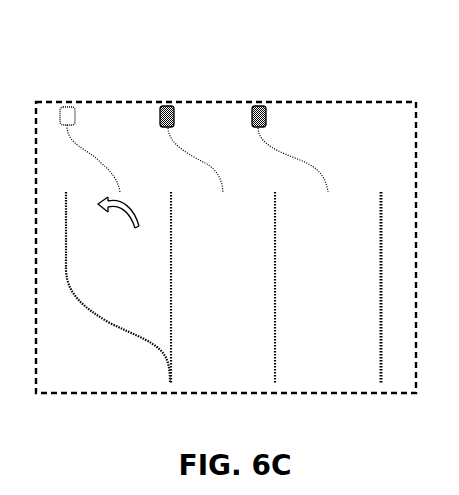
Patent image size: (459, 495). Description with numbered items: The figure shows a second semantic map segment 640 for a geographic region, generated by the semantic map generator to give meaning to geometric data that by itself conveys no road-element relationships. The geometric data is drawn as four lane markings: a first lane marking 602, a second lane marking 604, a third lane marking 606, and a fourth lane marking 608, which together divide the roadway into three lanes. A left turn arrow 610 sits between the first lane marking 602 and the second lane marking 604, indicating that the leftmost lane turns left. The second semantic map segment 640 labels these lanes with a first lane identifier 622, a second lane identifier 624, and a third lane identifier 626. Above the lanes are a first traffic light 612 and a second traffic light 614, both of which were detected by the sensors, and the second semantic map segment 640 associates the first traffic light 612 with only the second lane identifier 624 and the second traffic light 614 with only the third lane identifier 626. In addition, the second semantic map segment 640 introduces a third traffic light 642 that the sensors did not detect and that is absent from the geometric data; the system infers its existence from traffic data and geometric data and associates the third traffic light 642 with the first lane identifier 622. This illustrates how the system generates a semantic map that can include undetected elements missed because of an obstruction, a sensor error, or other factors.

The first lane marking 602 is at (67, 262).
The second lane marking 604 is at (171, 268).
The third lane marking 606 is at (275, 268).
The fourth lane marking 608 is at (380, 372).
The left turn arrow 610 is at (128, 207).
The first traffic light 612 is at (165, 107).
The second traffic light 614 is at (257, 107).
The first lane identifier 622 is at (118, 287).
The second lane identifier 624 is at (223, 287).
The third lane identifier 626 is at (328, 287).
The second semantic map segment 640 is at (343, 101).
The third traffic light 642 is at (67, 107).